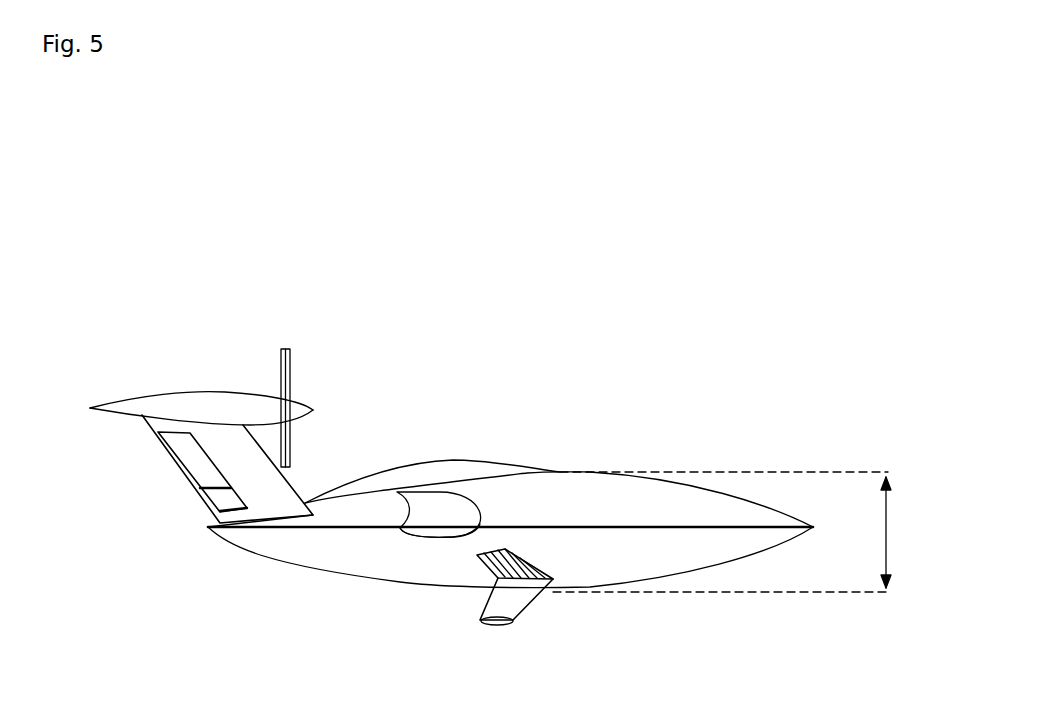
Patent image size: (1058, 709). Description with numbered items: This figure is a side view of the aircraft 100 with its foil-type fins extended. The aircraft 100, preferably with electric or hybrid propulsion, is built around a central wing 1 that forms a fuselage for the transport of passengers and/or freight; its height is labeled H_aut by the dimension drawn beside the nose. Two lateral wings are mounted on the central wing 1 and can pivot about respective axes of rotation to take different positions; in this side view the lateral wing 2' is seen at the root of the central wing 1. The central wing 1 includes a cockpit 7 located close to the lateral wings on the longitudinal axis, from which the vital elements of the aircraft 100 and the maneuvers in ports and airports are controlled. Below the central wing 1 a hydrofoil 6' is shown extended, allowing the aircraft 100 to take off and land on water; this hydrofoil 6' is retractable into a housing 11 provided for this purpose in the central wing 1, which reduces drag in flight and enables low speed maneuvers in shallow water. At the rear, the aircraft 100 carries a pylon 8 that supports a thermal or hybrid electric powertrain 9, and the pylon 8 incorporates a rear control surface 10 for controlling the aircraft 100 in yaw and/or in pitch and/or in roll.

The aircraft 100 is at (527, 313).
The central wing 1 is at (606, 510).
The lateral wing 2' is at (415, 594).
The hydrofoil 6' is at (556, 629).
The cockpit 7 is at (402, 465).
The pylon 8 is at (287, 500).
The powertrain 9 is at (242, 410).
The rear control surface 10 is at (198, 468).
The housing 11 is at (520, 557).